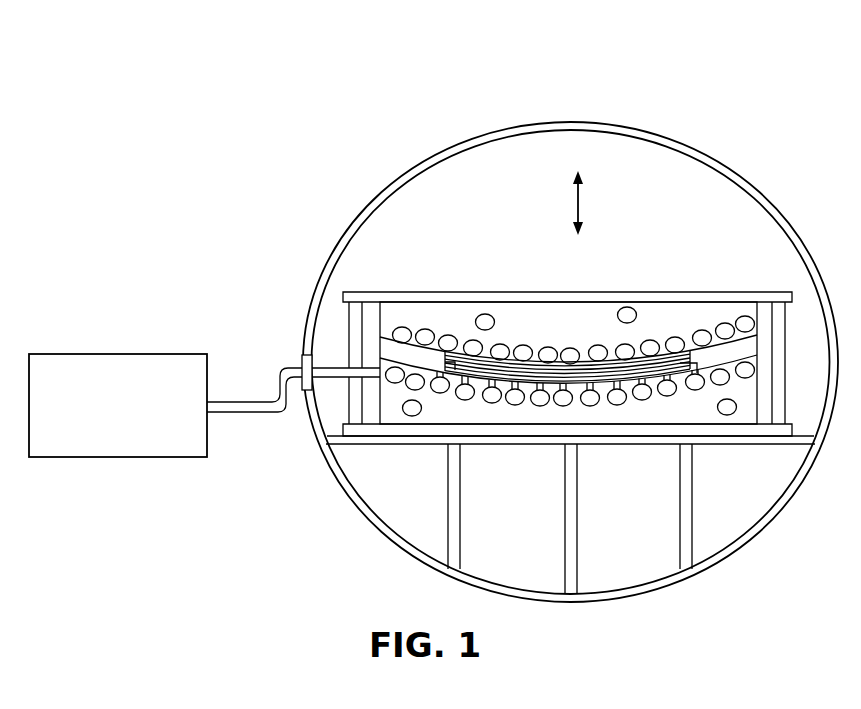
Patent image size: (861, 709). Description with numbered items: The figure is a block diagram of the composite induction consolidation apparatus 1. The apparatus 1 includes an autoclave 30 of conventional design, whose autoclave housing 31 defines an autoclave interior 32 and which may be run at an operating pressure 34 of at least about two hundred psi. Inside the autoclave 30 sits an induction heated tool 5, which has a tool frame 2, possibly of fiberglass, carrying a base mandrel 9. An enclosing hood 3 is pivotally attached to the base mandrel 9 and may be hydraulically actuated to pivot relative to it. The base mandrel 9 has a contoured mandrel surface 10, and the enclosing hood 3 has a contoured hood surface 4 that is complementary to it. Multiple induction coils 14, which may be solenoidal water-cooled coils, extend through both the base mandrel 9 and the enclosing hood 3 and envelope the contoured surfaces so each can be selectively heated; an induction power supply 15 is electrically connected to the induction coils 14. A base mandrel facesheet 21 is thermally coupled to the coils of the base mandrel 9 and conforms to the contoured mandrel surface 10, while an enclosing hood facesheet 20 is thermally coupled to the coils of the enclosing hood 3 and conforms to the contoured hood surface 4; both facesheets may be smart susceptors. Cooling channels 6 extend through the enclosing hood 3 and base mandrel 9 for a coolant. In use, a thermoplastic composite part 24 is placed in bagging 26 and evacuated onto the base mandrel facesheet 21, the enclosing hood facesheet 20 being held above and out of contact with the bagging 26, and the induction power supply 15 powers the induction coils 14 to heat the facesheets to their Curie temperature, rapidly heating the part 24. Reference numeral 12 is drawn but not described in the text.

The composite induction consolidation apparatus 1 is at (570, 306).
The tool frame 2 is at (386, 298).
The enclosing hood 3 is at (528, 325).
The contoured hood surface 4 is at (378, 346).
The induction heated tool 5 is at (527, 210).
The cooling channels 6 is at (485, 318).
The base mandrel 9 is at (527, 412).
The contoured mandrel surface 10 is at (752, 352).
The lower coil turn 12 is at (725, 410).
The induction coils 14 is at (430, 330).
The induction power supply 15 is at (118, 353).
The enclosing hood facesheet 20 is at (437, 380).
The base mandrel facesheet 21 is at (677, 358).
The thermoplastic composite part 24 is at (588, 372).
The bagging 26 is at (634, 368).
The autoclave 30 is at (394, 175).
The autoclave housing 31 is at (737, 172).
The autoclave interior 32 is at (626, 158).
The operating pressure 34 is at (580, 200).